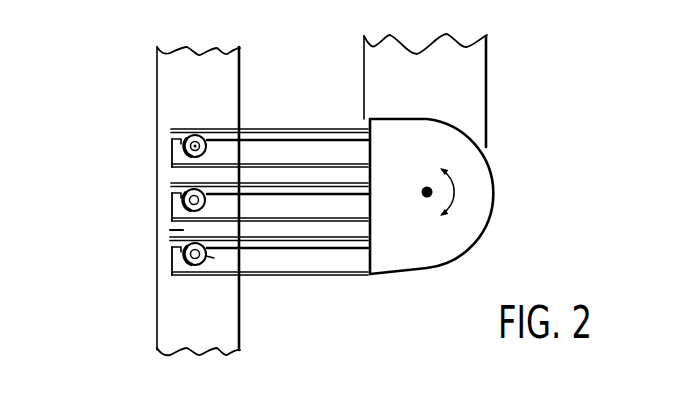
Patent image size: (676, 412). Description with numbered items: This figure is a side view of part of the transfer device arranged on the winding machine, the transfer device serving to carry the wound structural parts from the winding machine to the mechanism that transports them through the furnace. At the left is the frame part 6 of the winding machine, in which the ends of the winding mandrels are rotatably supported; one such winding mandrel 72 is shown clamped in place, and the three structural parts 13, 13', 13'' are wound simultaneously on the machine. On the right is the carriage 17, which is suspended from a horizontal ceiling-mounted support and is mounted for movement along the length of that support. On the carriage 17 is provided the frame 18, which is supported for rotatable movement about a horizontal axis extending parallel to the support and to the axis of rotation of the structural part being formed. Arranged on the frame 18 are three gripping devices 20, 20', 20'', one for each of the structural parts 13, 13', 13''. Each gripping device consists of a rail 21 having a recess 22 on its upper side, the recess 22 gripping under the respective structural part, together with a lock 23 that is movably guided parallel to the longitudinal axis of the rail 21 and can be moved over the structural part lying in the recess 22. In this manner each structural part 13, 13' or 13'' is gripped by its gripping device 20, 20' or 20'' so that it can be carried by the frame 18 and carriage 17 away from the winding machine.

The frame part 6 is at (163, 62).
The carriage 17 is at (470, 87).
The frame 18 is at (490, 184).
The gripping device 20 is at (269, 98).
The gripping device 20' is at (224, 189).
The gripping device 20'' is at (269, 290).
The structural part 13 is at (238, 146).
The structural part 13' is at (235, 214).
The structural part 13'' is at (150, 281).
The winding mandrel 72 is at (194, 135).
The lock 23 is at (172, 230).
The rail 21 is at (350, 262).
The recess 22 is at (214, 257).